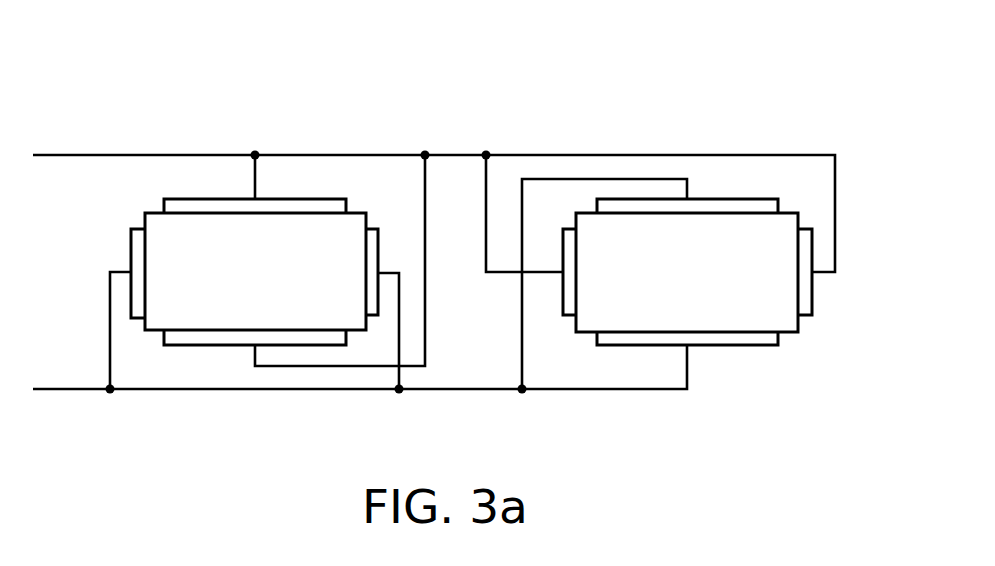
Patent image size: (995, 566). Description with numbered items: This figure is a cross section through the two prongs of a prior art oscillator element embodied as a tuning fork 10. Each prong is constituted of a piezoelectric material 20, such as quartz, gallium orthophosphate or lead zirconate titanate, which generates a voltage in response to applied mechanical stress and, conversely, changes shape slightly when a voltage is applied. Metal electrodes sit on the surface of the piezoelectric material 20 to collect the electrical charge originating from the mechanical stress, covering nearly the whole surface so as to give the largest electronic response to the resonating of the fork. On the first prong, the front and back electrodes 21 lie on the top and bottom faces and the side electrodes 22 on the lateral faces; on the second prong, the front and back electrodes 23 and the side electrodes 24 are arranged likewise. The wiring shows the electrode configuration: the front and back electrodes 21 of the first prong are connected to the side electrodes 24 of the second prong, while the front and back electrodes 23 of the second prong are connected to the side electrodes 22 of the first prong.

The tuning fork 10 is at (84, 70).
The piezoelectric material 20 is at (268, 286).
The front and back electrodes of the first prong 21 is at (207, 199).
The side electrodes of the first prong 22 is at (130, 244).
The front and back electrodes of the second prong 23 is at (735, 199).
The side electrodes of the second prong 24 is at (563, 302).